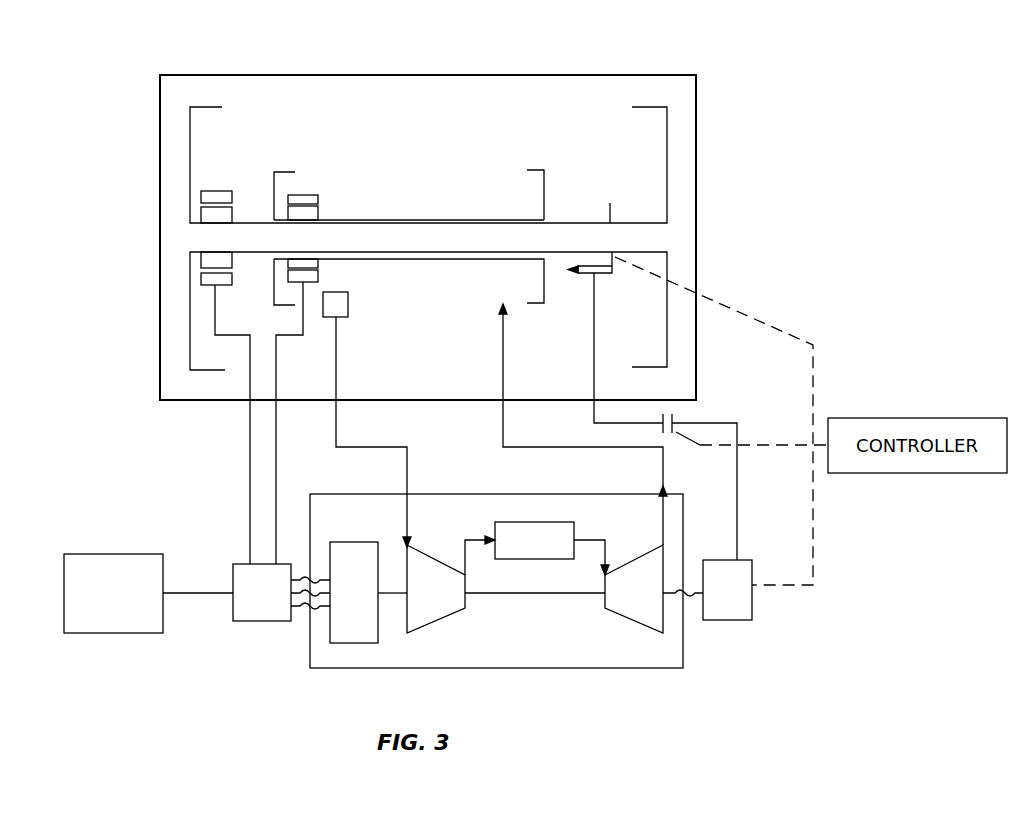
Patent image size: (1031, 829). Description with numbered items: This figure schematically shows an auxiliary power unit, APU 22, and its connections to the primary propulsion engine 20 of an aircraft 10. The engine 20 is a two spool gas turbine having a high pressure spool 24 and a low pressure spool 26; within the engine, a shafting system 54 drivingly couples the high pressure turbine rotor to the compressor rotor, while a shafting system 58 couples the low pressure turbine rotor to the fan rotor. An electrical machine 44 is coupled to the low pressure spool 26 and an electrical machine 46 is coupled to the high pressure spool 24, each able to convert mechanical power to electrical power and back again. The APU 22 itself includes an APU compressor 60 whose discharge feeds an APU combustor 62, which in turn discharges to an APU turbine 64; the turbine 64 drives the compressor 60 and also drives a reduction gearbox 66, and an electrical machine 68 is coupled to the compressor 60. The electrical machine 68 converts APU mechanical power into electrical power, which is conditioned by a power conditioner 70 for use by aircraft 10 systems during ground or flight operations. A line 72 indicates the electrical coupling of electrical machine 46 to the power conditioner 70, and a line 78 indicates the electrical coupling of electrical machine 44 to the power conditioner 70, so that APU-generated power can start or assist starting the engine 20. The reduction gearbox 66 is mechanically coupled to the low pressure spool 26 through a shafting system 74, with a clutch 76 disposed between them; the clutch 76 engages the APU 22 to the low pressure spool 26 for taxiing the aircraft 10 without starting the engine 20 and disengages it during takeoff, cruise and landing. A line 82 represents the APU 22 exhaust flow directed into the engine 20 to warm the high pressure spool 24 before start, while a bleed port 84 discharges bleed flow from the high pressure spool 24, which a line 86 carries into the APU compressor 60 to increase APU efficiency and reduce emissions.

The aircraft 10 is at (148, 593).
The engine 20 is at (803, 54).
The APU 22 is at (781, 655).
The high pressure spool 24 is at (546, 190).
The low pressure spool 26 is at (668, 166).
The electrical machine 44 is at (215, 190).
The electrical machine 46 is at (304, 194).
The shafting system 54 is at (372, 217).
The shafting system 58 is at (553, 222).
The APU compressor 60 is at (506, 584).
The APU combustor 62 is at (552, 548).
The APU turbine 64 is at (654, 589).
The reduction gearbox 66 is at (727, 590).
The electrical machine 68 is at (368, 592).
The power conditioner 70 is at (262, 592).
The line 72 is at (279, 490).
The shafting system 74 is at (597, 333).
The clutch 76 is at (680, 421).
The line 78 is at (249, 507).
The line 82 is at (507, 424).
The bleed port 84 is at (349, 306).
The line 86 is at (355, 447).